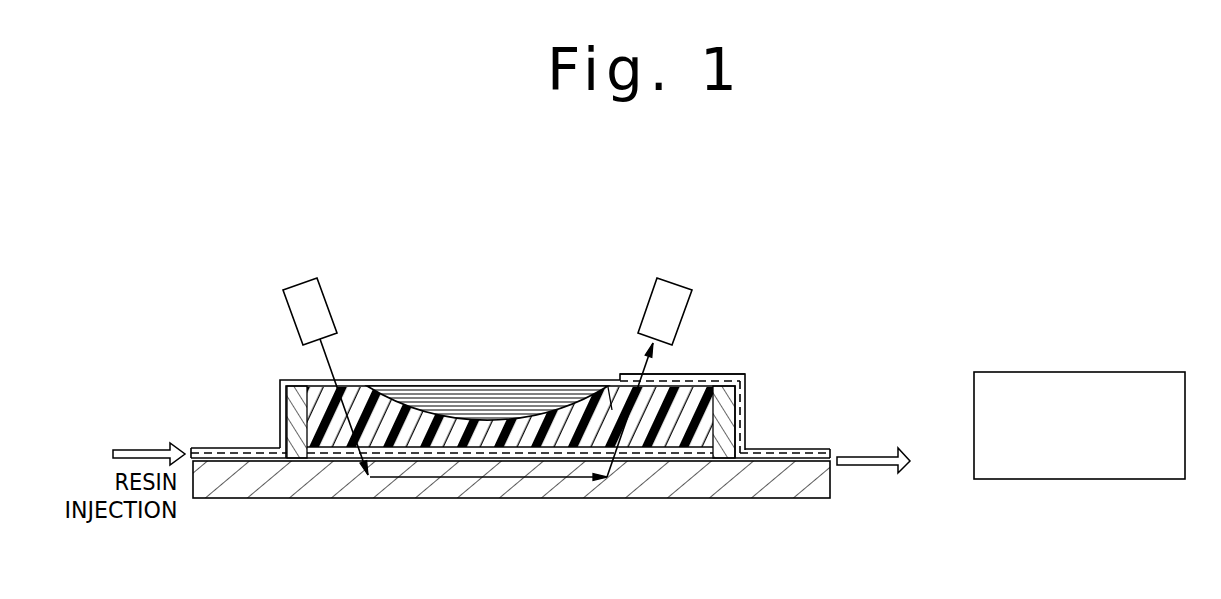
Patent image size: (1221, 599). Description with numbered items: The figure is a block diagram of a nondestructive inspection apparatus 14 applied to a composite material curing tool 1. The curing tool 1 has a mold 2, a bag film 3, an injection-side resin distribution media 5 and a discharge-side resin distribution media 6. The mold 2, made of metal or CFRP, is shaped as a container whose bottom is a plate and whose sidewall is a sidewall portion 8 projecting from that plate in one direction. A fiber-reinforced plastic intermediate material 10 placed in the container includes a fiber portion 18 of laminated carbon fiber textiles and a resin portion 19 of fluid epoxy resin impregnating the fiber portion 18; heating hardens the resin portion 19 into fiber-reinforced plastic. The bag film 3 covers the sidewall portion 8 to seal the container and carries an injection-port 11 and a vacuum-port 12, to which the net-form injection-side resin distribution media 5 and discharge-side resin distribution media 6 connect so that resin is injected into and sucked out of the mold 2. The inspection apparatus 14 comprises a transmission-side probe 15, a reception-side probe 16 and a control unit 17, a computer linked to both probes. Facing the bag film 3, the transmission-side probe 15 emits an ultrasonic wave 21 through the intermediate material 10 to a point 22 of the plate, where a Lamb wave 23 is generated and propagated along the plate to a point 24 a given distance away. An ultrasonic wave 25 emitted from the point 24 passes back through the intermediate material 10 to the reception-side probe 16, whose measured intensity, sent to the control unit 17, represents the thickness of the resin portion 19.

The composite material curing tool 1 is at (840, 390).
The mold 2 is at (828, 481).
The bag film 3 is at (425, 380).
The injection-side resin distribution media 5 is at (333, 410).
The discharge-side resin distribution media 6 is at (705, 380).
The sidewall portion 8 is at (297, 413).
The fiber-reinforced plastic intermediate material 10 is at (465, 386).
The injection-port 11 is at (222, 447).
The vacuum-port 12 is at (793, 452).
The nondestructive inspection apparatus 14 is at (539, 262).
The transmission-side probe 15 is at (300, 285).
The reception-side probe 16 is at (677, 280).
The control unit 17 is at (1080, 372).
The fiber portion 18 is at (522, 404).
The resin portion 19 is at (612, 408).
The ultrasonic wave 21 is at (300, 440).
The point 22 is at (367, 476).
The Lamb wave 23 is at (458, 480).
The point 24 is at (613, 463).
The ultrasonic wave 25 is at (658, 362).